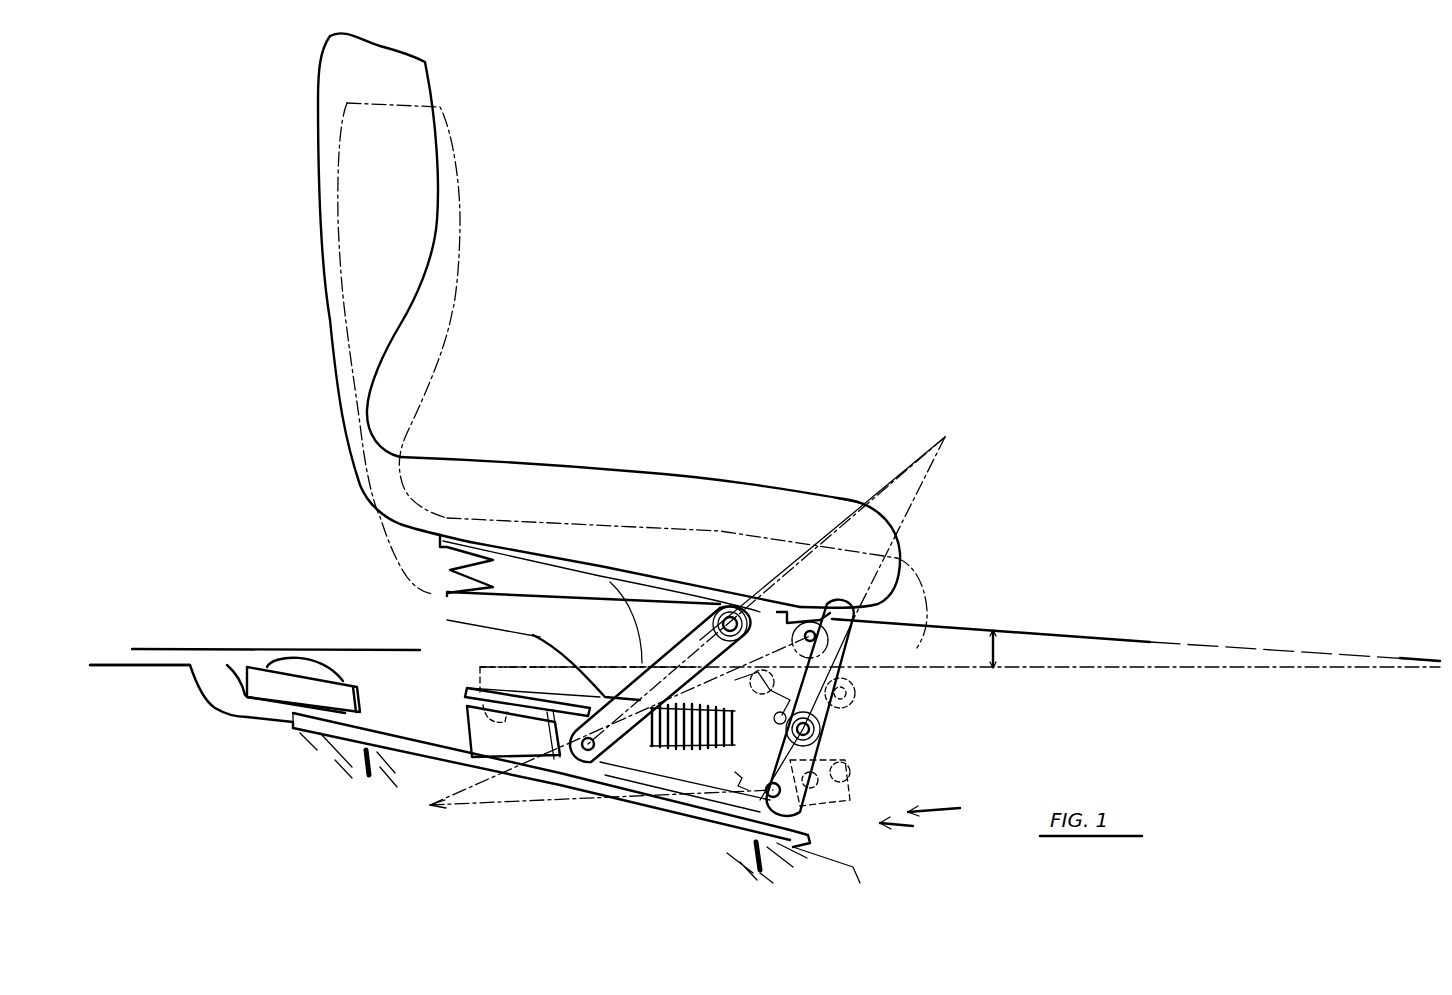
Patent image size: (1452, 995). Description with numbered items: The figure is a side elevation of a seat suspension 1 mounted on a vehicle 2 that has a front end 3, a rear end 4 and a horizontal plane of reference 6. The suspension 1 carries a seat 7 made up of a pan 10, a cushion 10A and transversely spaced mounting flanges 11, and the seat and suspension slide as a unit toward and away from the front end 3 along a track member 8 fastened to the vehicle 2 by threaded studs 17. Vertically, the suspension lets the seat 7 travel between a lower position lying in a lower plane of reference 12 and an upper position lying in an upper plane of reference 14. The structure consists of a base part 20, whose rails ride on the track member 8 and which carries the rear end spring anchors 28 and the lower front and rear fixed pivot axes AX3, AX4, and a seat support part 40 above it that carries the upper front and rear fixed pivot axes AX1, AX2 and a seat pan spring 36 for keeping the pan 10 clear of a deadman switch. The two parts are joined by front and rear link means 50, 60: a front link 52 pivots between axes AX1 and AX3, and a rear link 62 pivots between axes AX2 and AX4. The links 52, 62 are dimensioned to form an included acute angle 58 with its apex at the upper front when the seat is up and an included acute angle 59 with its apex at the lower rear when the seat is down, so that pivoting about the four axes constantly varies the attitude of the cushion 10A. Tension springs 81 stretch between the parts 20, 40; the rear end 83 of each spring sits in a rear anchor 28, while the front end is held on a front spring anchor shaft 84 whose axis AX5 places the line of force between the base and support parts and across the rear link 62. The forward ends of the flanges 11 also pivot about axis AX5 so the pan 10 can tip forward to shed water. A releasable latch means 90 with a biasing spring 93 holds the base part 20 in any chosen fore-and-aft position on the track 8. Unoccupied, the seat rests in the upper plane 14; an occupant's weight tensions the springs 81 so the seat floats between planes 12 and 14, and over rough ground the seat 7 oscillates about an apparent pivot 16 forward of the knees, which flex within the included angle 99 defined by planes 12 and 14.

The seat suspension 1 is at (943, 809).
The vehicle 2 is at (195, 665).
The front end 3 is at (864, 876).
The rear end 4 is at (100, 665).
The horizontal plane of reference 6 is at (242, 649).
The seat 7 is at (838, 498).
The track member 8 is at (642, 797).
The pan 10 is at (352, 481).
The cushion 10A is at (640, 470).
The mounting flanges 11 is at (840, 637).
The lower plane of reference 12 is at (1092, 667).
The upper plane of reference 14 is at (1085, 640).
The apparent pivot 16 is at (1440, 661).
The threaded studs 17 is at (360, 768).
The base part 20 is at (822, 840).
The rear end spring anchors 28 is at (468, 704).
The seat pan spring 36 is at (440, 580).
The seat support part 40 is at (540, 590).
The front link means 50 is at (826, 763).
The front link 52 is at (815, 750).
The included acute angle 58 is at (945, 437).
The included acute angle 59 is at (430, 805).
The rear link means 60 is at (626, 682).
The rear link 62 is at (640, 640).
The tension springs 81 is at (680, 756).
The rear end 83 is at (500, 688).
The front spring anchor shaft 84 is at (773, 697).
The releasable latch means 90 is at (910, 830).
The biasing spring 93 is at (718, 768).
The included angle 99 is at (996, 645).
The upper front fixed pivot axis AX1 is at (820, 728).
The upper rear fixed pivot axis AX2 is at (732, 617).
The lower front fixed pivot axis AX3 is at (766, 794).
The lower rear fixed pivot axis AX4 is at (585, 760).
The axis of front spring anchor shaft AX5 is at (812, 628).